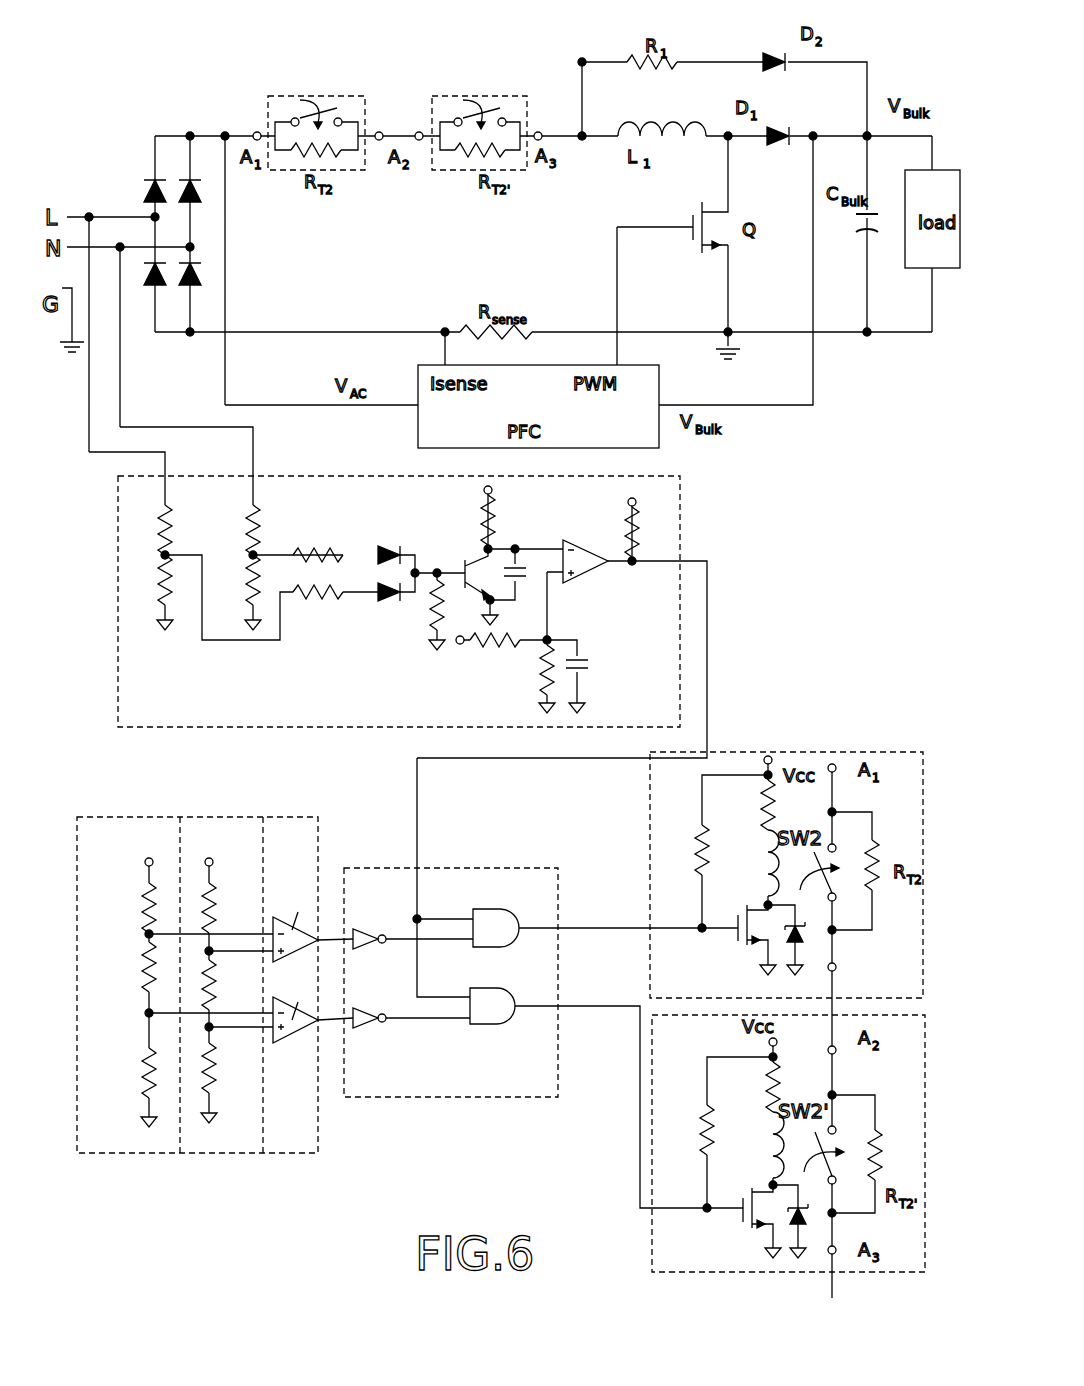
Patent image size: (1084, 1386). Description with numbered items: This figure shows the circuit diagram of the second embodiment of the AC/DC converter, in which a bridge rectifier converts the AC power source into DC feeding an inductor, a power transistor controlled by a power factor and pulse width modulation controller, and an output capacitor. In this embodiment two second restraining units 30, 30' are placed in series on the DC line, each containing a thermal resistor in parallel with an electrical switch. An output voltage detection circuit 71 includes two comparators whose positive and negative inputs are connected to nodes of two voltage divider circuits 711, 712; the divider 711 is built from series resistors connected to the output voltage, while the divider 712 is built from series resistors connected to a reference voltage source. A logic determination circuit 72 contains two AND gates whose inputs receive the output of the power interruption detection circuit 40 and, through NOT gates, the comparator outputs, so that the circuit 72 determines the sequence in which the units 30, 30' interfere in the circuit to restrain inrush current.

The second restraining unit 30 is at (316, 115).
The second restraining unit 30' is at (479, 115).
The power interruption detection circuit 40 is at (178, 727).
The output voltage detection circuit 71 is at (245, 818).
The voltage divider circuit 711 is at (122, 1146).
The voltage divider circuit 712 is at (243, 1142).
The logic determination circuit 72 is at (448, 1085).